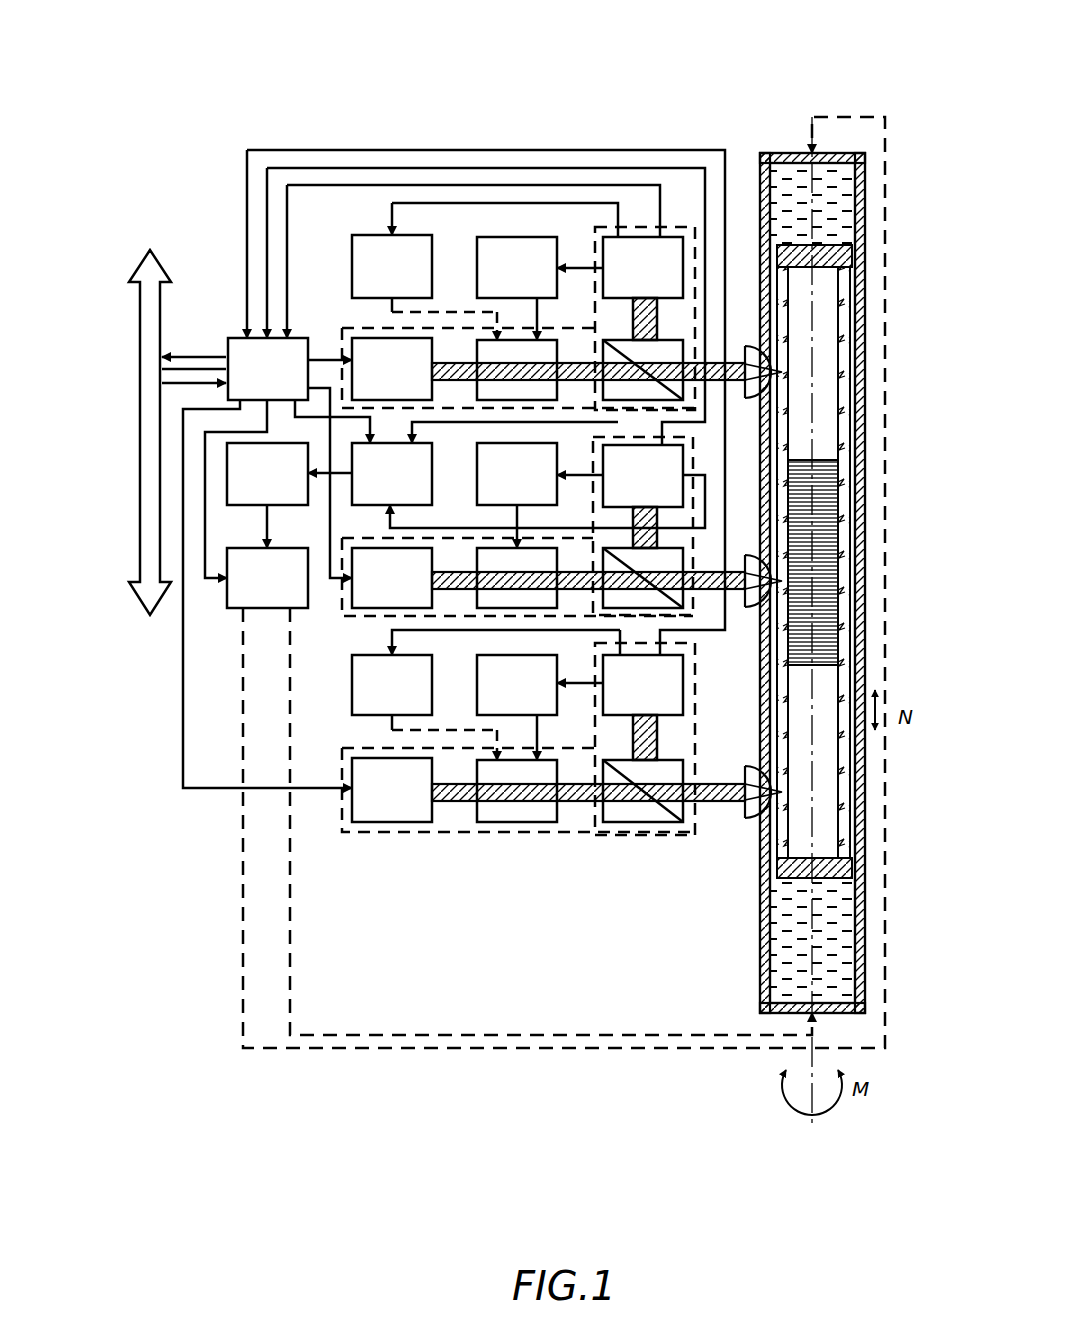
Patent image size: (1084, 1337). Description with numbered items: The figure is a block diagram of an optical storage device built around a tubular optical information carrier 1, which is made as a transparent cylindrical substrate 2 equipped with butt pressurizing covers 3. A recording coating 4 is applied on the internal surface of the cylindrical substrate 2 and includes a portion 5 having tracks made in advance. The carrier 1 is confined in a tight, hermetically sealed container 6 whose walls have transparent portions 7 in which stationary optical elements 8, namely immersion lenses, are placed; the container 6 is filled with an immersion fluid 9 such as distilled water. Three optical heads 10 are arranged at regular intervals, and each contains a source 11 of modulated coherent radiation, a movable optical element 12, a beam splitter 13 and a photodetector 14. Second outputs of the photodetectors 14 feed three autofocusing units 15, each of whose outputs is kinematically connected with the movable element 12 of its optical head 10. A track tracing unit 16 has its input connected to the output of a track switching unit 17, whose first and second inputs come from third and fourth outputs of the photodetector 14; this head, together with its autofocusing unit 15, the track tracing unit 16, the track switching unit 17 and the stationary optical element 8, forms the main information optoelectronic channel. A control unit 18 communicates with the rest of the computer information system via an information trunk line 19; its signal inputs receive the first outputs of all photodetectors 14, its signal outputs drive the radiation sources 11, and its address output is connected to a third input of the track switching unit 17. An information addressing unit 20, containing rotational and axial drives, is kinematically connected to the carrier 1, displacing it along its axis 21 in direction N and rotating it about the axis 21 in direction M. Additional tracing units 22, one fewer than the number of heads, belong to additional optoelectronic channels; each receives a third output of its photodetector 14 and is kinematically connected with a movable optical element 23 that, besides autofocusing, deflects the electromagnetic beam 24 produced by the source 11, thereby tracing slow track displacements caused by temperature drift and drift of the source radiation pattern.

The tubular optical information carrier 1 is at (780, 303).
The transparent cylindrical substrate 2 is at (843, 400).
The butt pressurizing covers 3 is at (852, 246).
The recording coating 4 is at (790, 340).
The portion having tracks made in advance 5 is at (822, 493).
The container 6 is at (863, 535).
The transparent portions 7 is at (755, 405).
The stationary optical elements 8 is at (762, 360).
The immersion fluid 9 is at (843, 960).
The optical heads 10 is at (342, 333).
The source of modulated coherent radiation 11 is at (373, 357).
The movable optical element 12 is at (485, 562).
The beam splitter 13 is at (668, 848).
The photodetector 14 is at (662, 255).
The autofocusing unit 15 is at (540, 252).
The track tracing unit 16 is at (230, 496).
The track switching unit 17 is at (428, 466).
The control unit 18 is at (228, 346).
The information trunk line 19 is at (147, 275).
The information addressing unit 20 is at (265, 610).
The axis 21 is at (812, 903).
The additional tracing unit 22 is at (372, 255).
The movable optical element 23 is at (503, 853).
The electromagnetic beam 24 is at (653, 745).